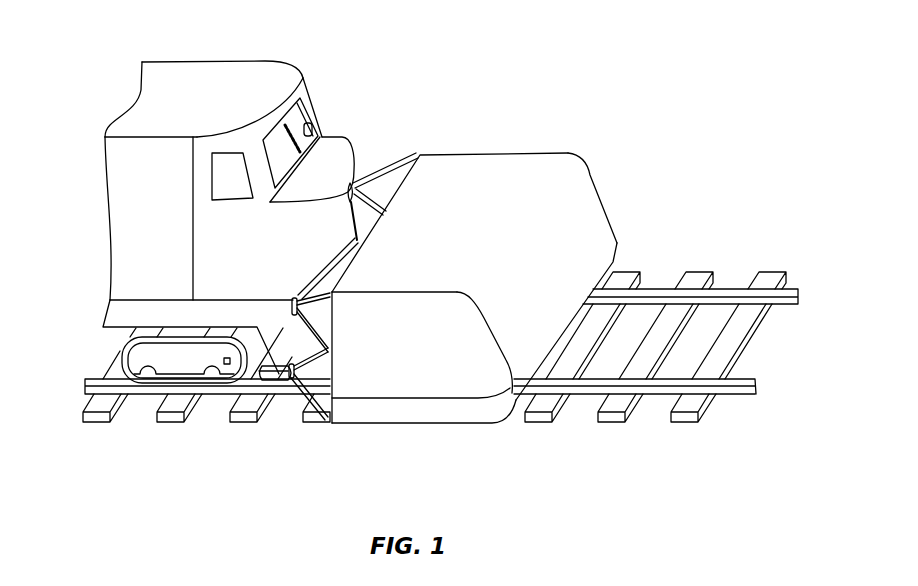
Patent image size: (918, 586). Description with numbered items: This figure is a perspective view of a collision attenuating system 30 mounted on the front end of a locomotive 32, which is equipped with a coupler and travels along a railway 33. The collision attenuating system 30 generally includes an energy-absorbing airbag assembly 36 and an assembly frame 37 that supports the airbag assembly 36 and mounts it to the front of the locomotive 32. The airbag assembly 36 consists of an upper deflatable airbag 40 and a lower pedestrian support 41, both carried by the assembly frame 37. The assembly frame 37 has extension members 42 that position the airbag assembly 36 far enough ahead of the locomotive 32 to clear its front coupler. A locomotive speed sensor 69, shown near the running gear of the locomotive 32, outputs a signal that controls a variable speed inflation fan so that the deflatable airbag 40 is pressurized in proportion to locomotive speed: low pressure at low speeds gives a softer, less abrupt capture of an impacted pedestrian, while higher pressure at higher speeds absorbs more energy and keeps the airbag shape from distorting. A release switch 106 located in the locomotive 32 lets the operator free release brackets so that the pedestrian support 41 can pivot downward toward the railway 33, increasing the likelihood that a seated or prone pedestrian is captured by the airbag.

The collision attenuating system 30 is at (590, 106).
The locomotive 32 is at (257, 67).
The railway 33 is at (703, 282).
The energy-absorbing airbag assembly 36 is at (586, 175).
The assembly frame 37 is at (415, 156).
The deflatable airbag 40 is at (473, 163).
The pedestrian support 41 is at (614, 243).
The extension members 42 is at (380, 163).
The locomotive speed sensor 69 is at (227, 382).
The release switch 106 is at (311, 121).